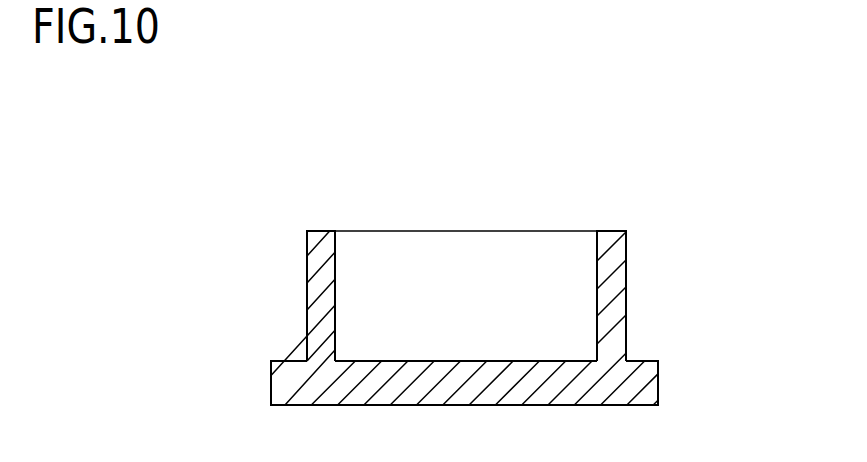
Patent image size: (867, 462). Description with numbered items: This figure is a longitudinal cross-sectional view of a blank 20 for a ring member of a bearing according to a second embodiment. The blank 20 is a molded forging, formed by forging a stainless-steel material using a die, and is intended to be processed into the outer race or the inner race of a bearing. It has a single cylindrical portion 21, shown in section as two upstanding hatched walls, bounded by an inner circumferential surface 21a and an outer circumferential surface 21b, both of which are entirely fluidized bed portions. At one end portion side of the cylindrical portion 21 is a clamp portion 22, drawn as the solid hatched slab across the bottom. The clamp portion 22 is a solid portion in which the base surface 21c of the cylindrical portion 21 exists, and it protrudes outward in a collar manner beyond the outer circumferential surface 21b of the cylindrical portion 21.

The blank 20 is at (476, 265).
The cylindrical portion 21 is at (461, 295).
The inner circumferential surface 21a is at (335, 270).
The outer circumferential surface 21b is at (307, 294).
The base surface 21c is at (495, 360).
The clamp portion 22 is at (507, 348).